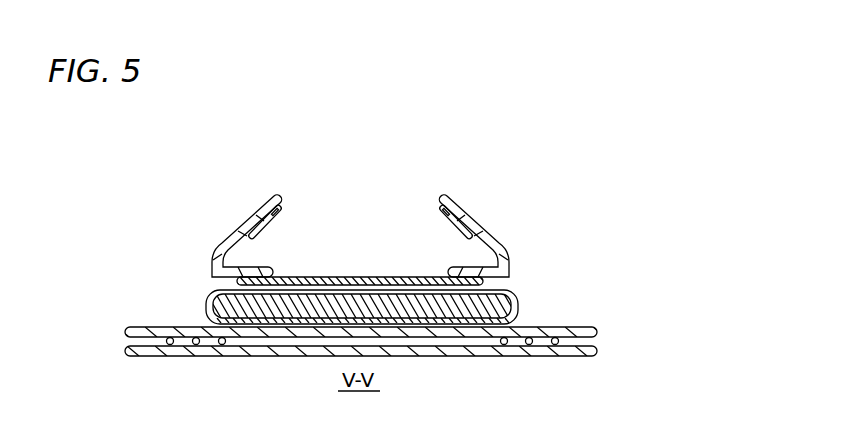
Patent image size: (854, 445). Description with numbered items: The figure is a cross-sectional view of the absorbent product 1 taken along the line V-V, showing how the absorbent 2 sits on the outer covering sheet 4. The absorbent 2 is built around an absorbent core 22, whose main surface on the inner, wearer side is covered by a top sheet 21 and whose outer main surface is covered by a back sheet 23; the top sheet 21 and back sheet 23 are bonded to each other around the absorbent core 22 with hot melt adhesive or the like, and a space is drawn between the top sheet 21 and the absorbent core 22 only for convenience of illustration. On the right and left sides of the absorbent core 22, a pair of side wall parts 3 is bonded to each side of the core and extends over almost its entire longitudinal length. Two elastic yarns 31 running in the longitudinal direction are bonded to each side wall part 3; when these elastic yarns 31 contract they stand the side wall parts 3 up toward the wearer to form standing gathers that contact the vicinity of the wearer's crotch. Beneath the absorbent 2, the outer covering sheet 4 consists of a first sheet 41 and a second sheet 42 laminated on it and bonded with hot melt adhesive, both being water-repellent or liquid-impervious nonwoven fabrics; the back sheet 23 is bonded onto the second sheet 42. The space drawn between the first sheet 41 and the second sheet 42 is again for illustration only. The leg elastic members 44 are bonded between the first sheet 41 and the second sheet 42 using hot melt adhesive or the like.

The absorbent product 1 is at (146, 175).
The absorbent 2 is at (103, 301).
The top sheet 21 is at (236, 284).
The absorbent core 22 is at (222, 297).
The back sheet 23 is at (233, 307).
The side wall part 3 is at (240, 227).
The elastic yarn 31 is at (273, 207).
The outer covering sheet 4 is at (698, 346).
The first sheet 41 is at (599, 350).
The second sheet 42 is at (599, 332).
The leg elastic member 44 is at (170, 345).